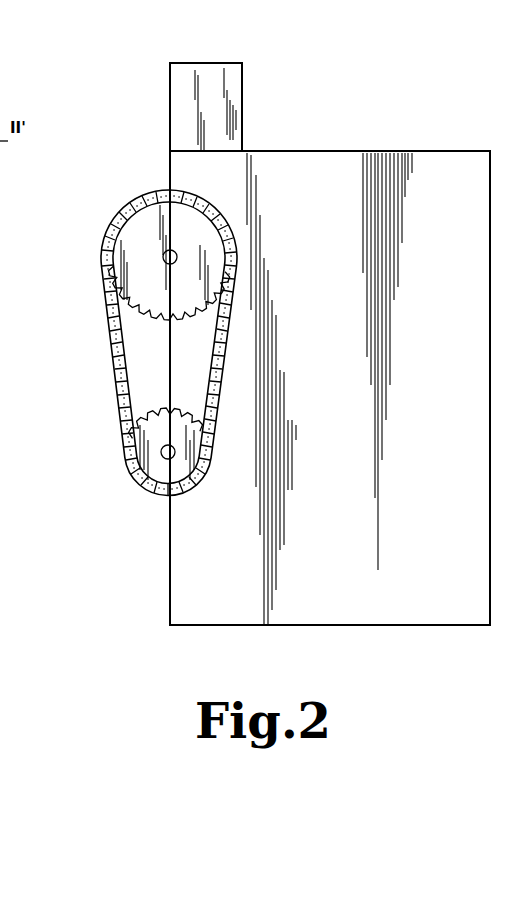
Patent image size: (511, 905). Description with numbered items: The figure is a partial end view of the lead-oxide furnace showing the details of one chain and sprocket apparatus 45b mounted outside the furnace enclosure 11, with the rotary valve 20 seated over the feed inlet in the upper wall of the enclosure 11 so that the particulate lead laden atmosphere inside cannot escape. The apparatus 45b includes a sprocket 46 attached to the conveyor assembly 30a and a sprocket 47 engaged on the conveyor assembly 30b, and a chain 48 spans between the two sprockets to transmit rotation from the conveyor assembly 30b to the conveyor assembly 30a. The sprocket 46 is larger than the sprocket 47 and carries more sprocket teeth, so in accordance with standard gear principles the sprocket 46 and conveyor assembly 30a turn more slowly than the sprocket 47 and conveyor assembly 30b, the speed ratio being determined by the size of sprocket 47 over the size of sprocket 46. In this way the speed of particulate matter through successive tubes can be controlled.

The enclosure 11 is at (365, 401).
The rotary valve 20 is at (243, 99).
The conveyor assembly 30a is at (176, 252).
The conveyor assembly 30b is at (176, 455).
The chain and sprocket apparatus 45b is at (103, 301).
The sprocket 46 is at (131, 231).
The sprocket 47 is at (139, 478).
The chain 48 is at (108, 356).